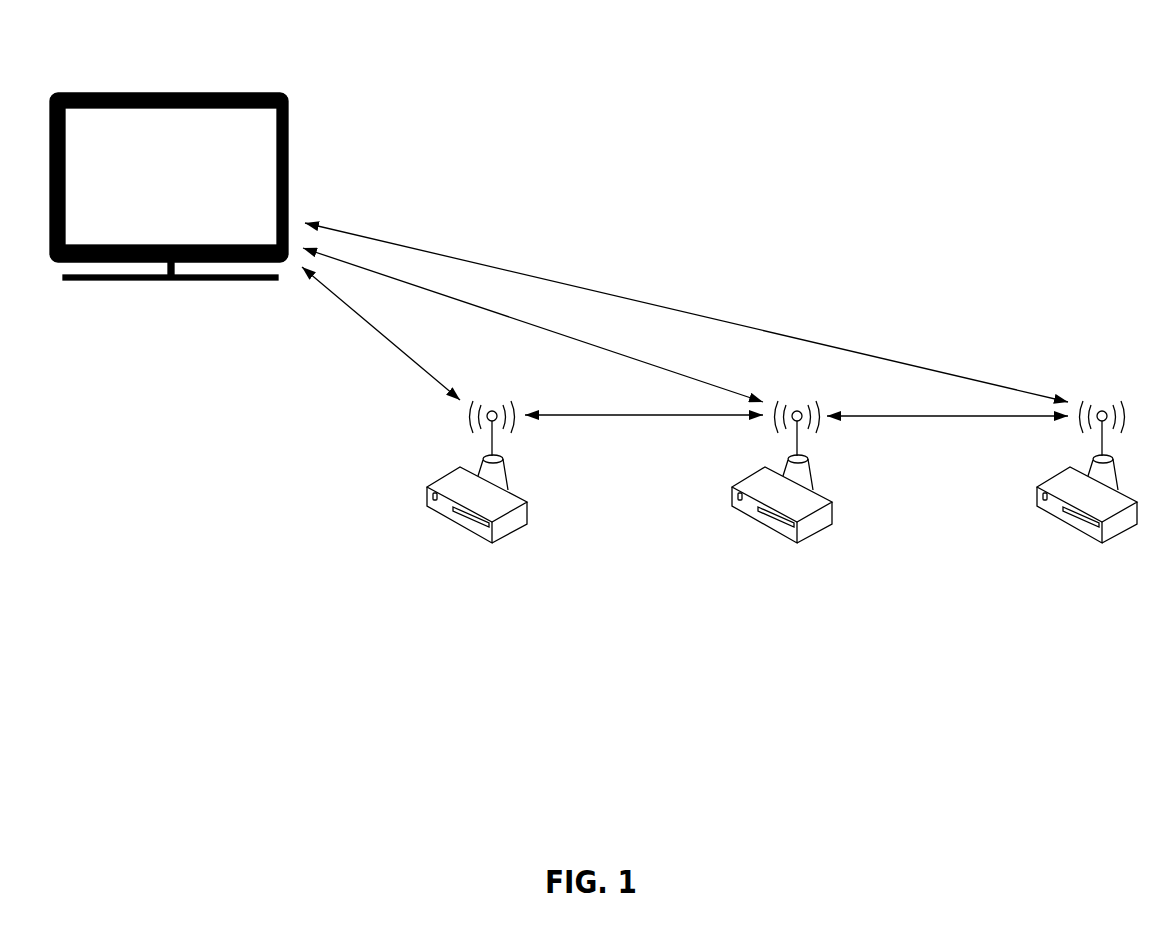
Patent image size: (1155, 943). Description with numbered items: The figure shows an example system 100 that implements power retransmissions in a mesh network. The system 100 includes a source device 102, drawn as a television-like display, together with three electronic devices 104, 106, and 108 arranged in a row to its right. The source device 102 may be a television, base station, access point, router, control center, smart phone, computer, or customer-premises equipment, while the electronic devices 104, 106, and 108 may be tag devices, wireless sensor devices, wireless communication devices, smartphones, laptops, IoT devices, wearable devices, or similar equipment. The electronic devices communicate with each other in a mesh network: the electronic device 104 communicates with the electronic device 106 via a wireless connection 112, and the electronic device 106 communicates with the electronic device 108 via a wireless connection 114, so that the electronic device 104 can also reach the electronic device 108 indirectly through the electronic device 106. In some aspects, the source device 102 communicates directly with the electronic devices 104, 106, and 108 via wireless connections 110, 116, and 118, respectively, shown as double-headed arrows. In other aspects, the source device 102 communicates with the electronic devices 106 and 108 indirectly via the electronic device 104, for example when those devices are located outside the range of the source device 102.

The system 100 is at (1023, 82).
The source device 102 is at (202, 279).
The electronic device 104 is at (483, 535).
The electronic device 106 is at (818, 533).
The electronic device 108 is at (1115, 537).
The wireless connection 110 is at (372, 326).
The wireless connection 112 is at (648, 416).
The wireless connection 114 is at (948, 417).
The wireless connection 116 is at (483, 307).
The wireless connection 118 is at (716, 322).